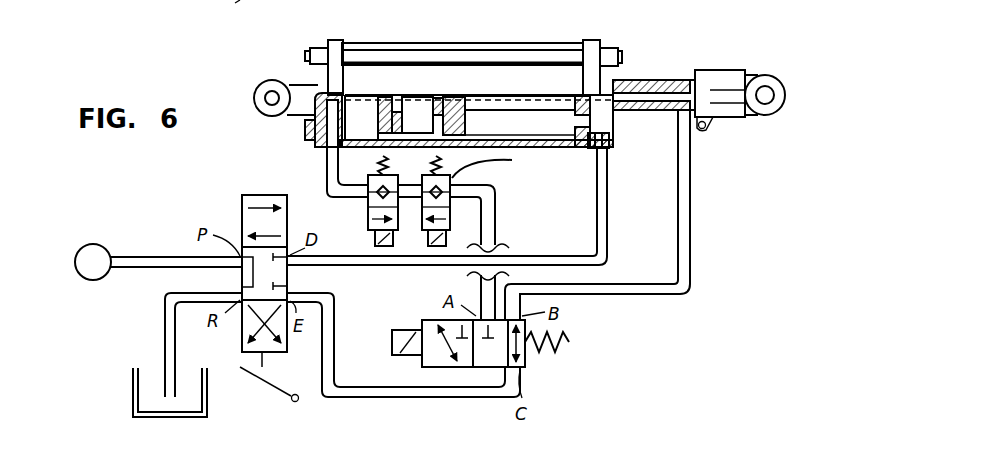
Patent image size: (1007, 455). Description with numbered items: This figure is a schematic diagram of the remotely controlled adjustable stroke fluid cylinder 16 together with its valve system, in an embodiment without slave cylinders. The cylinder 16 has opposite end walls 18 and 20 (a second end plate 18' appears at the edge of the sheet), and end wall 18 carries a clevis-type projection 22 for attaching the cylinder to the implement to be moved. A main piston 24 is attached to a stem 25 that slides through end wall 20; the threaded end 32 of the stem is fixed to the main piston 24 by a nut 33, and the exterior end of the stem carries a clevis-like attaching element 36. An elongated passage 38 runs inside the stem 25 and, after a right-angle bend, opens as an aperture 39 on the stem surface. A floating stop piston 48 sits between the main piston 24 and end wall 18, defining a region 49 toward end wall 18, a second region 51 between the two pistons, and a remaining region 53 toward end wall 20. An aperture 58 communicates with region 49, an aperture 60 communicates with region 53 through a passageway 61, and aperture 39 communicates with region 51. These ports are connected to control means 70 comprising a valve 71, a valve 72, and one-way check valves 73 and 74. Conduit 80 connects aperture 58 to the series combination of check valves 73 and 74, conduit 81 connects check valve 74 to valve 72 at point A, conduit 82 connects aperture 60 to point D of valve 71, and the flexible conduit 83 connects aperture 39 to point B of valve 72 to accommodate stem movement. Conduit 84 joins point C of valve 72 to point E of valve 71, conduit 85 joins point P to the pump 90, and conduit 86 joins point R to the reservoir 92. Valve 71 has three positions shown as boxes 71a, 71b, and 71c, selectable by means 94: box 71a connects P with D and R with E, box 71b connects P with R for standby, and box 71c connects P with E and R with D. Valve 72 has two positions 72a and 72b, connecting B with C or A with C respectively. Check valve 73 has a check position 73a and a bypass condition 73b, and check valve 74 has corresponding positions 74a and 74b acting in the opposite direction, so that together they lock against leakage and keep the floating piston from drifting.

The remotely controlled adjustable stroke fluid cylinder 16 is at (507, 43).
The end wall 18 is at (323, 54).
The end plate 18' is at (224, 7).
The end wall 20 is at (592, 41).
The clevis-type projection 22 is at (262, 80).
The main piston 24 is at (468, 125).
The stem 25 is at (685, 78).
The threaded end 32 is at (420, 100).
The nut 33 is at (453, 100).
The clevis-like attaching element 36 is at (766, 72).
The elongated passage 38 is at (640, 97).
The aperture 39 is at (683, 110).
The floating stop piston 48 is at (393, 100).
The region 49 is at (364, 100).
The second region 51 is at (415, 103).
The remaining region 53 is at (530, 117).
The aperture 58 is at (322, 148).
The aperture 60 is at (604, 151).
The passageway 61 is at (573, 125).
The control means 70 is at (227, 210).
The valve 71 is at (243, 195).
The box 71a is at (207, 176).
The box 71b is at (288, 273).
The box 71c is at (241, 357).
The valve 72 is at (526, 368).
The box 72a is at (527, 355).
The box 72b is at (427, 320).
The one-way check valve 73 is at (367, 210).
The check position 73a is at (374, 176).
The bypass condition 73b is at (377, 228).
The one-way check valve 74 is at (453, 178).
The check position 74a is at (500, 167).
The bypass condition 74b is at (452, 203).
The conduit 80 is at (326, 188).
The conduit 81 is at (497, 227).
The conduit 82 is at (606, 237).
The conduit 83 is at (690, 265).
The conduit 84 is at (412, 398).
The conduit 85 is at (153, 256).
The conduit 86 is at (165, 325).
The pump 90 is at (104, 242).
The reservoir 92 is at (133, 393).
The means 94 is at (285, 398).